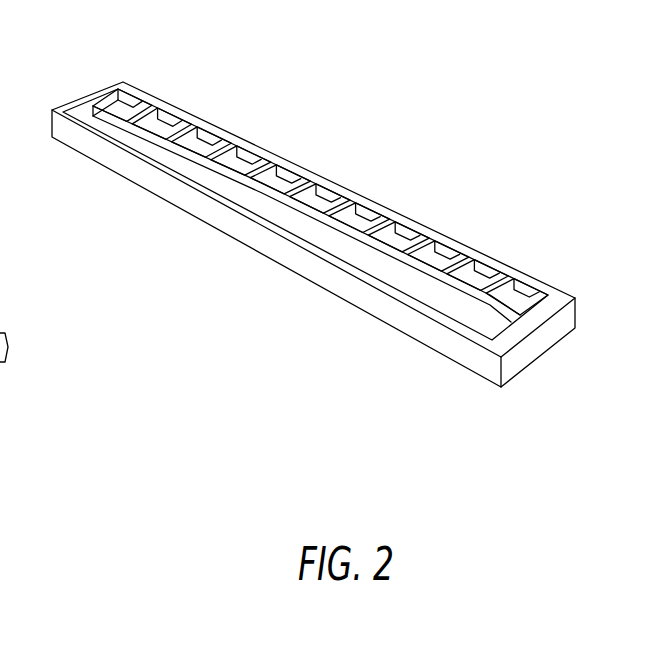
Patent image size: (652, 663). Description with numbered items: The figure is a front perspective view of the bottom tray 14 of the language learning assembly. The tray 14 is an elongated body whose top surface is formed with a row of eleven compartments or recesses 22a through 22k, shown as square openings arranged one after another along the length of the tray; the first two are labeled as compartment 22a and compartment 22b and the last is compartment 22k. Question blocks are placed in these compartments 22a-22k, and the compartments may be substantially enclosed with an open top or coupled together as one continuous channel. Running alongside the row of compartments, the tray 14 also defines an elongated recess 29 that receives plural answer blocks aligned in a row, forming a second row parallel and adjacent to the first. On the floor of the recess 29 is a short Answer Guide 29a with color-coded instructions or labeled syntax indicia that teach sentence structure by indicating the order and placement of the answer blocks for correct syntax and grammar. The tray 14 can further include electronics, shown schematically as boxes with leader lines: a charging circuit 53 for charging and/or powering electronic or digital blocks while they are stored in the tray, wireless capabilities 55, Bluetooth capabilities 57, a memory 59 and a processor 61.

The bottom tray 14 is at (556, 314).
The elongated recess 29 is at (516, 328).
The short Answer Guide 29a is at (92, 118).
The compartment 22a is at (125, 93).
The compartment 22b is at (156, 114).
The compartment 22k is at (528, 292).
The charging circuit 53 is at (455, 343).
The wireless capabilities 55 is at (366, 293).
The Bluetooth capabilities 57 is at (302, 262).
The memory 59 is at (312, 170).
The processor 61 is at (376, 190).